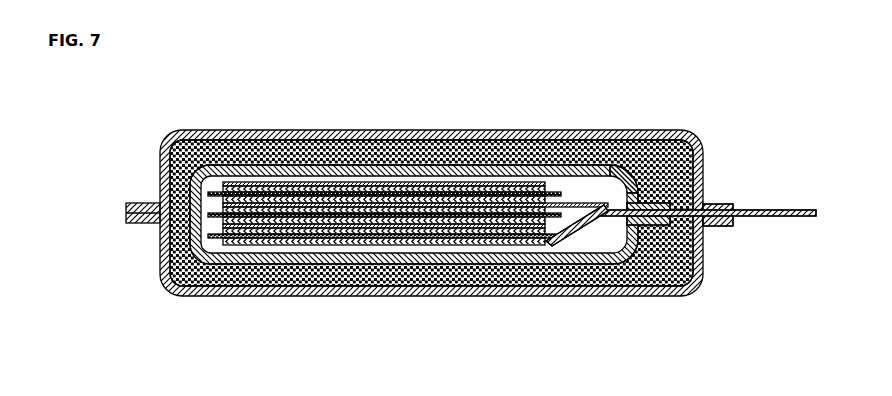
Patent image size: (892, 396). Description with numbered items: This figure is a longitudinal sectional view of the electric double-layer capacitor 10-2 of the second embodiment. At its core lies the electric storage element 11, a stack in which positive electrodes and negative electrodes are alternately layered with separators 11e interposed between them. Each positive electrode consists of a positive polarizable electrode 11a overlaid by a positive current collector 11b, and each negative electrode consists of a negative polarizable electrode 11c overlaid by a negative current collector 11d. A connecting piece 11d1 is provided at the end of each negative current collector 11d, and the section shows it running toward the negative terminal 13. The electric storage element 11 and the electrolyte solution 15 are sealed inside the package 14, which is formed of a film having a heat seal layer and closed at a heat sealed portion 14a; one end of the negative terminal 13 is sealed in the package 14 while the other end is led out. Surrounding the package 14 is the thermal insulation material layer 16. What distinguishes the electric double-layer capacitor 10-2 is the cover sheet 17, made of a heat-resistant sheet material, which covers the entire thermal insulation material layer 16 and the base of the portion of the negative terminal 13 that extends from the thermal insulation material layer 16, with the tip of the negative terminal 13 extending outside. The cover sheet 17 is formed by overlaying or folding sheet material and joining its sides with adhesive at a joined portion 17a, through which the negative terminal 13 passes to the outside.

The electric double-layer capacitor 10-2 is at (206, 122).
The electric storage element 11 is at (240, 174).
The positive polarizable electrode 11a is at (273, 186).
The positive current collector 11b is at (310, 190).
The negative polarizable electrode 11c is at (356, 197).
The negative current collector 11d is at (386, 210).
The separator 11e is at (432, 176).
The connecting piece 11d1 is at (583, 201).
The negative terminal 13 is at (766, 203).
The package 14 is at (535, 160).
The heat sealed portion 14a is at (648, 196).
The electrolyte solution 15 is at (603, 181).
The thermal insulation material layer 16 is at (486, 150).
The cover sheet 17 is at (572, 124).
The joined portion 17a is at (712, 198).